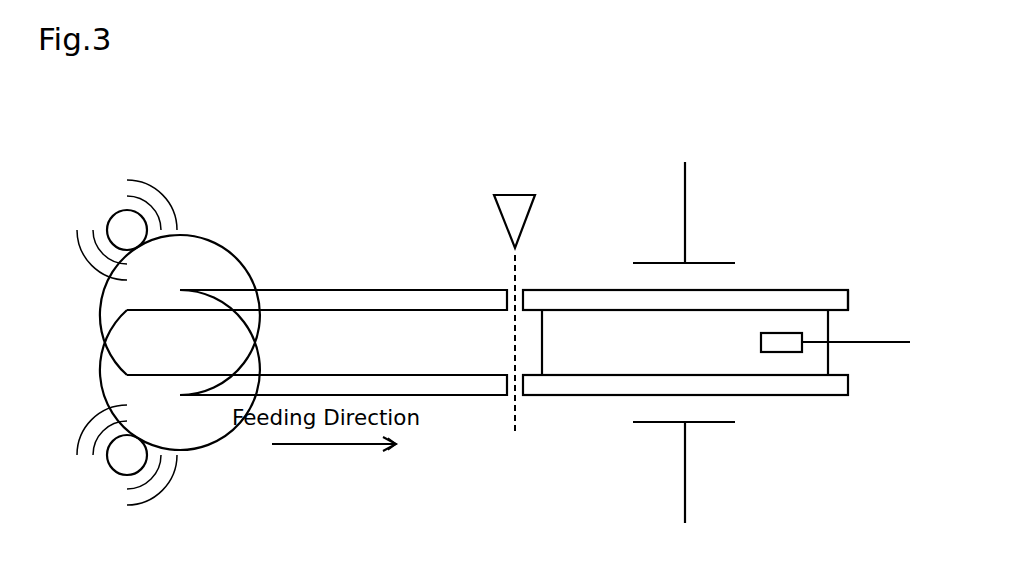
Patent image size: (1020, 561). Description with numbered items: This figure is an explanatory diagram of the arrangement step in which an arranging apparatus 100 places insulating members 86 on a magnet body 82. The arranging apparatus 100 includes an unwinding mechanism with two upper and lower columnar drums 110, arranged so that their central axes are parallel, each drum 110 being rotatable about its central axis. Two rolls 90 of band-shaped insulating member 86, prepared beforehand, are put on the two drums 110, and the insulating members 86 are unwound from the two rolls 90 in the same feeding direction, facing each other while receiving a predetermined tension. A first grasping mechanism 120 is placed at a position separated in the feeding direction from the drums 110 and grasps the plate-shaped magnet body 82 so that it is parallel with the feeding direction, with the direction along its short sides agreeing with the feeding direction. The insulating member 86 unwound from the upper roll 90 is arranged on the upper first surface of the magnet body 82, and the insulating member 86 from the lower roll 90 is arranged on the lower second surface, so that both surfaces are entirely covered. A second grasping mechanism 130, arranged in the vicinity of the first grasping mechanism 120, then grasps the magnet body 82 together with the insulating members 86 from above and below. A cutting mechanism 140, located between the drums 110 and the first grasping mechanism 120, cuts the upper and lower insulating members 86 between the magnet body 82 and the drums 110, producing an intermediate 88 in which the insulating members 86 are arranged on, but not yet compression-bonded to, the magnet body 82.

The arranging apparatus 100 is at (103, 134).
The roll 90 is at (183, 165).
The drum 110 is at (127, 450).
The cutting mechanism 140 is at (520, 195).
The second grasping mechanism 130 is at (686, 190).
The insulating member 86 is at (786, 290).
The intermediate 88 is at (857, 276).
The first grasping mechanism 120 is at (881, 341).
The magnet body 82 is at (831, 353).